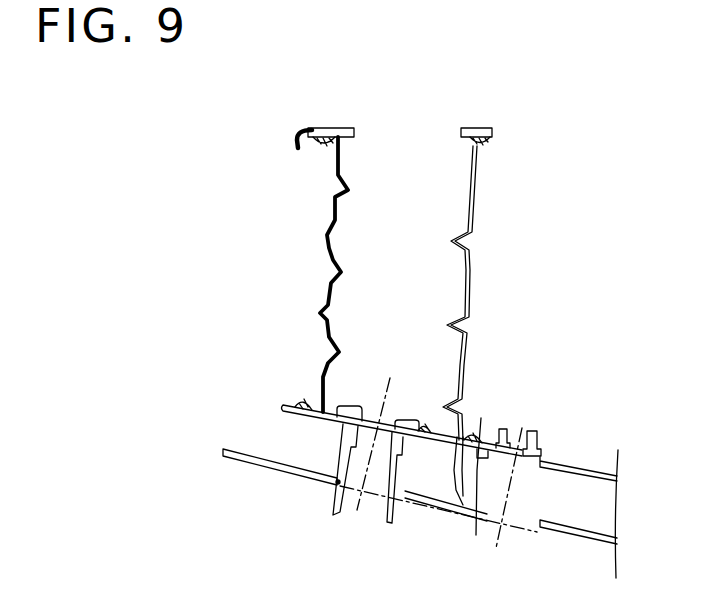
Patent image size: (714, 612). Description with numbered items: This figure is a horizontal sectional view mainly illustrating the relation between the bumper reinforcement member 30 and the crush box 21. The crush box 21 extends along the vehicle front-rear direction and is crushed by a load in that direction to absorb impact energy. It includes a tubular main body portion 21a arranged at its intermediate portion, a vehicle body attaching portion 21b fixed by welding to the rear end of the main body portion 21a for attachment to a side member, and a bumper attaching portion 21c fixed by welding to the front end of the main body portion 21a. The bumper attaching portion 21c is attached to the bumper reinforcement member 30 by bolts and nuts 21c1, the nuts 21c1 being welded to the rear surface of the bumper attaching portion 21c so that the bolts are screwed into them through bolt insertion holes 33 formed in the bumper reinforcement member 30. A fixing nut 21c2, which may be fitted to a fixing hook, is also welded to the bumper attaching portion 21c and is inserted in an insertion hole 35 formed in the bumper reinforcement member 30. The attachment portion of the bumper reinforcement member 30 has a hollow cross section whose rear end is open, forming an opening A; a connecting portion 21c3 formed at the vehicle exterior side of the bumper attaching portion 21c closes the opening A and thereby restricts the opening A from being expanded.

The crush box 21 is at (470, 268).
The main body portion 21a is at (331, 259).
The vehicle body attaching portion 21b is at (315, 128).
The bumper attaching portion 21c is at (290, 416).
The nut 21c1 is at (539, 443).
The fixing nut 21c2 is at (333, 516).
The connecting portion 21c3 is at (463, 505).
The bumper reinforcement member 30 is at (238, 457).
The bolt insertion hole 33 is at (537, 531).
The insertion hole 35 is at (337, 483).
The opening A is at (443, 437).